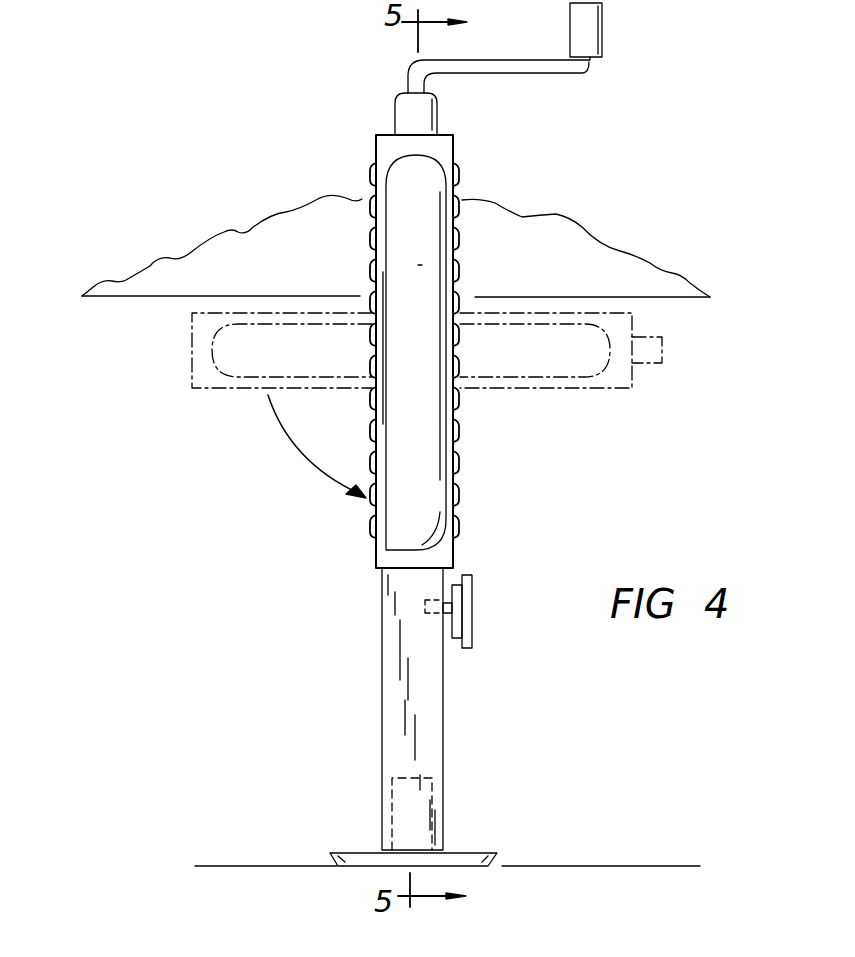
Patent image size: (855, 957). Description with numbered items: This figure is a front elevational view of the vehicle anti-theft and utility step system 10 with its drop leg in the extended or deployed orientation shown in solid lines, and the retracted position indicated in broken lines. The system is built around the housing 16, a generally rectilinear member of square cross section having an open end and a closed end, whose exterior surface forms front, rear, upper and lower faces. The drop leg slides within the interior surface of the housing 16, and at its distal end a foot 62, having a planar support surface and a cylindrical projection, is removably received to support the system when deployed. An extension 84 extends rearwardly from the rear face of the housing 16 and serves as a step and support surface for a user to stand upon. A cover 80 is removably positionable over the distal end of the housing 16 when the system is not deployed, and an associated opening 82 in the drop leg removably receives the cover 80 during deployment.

The vehicle anti-theft and utility step system 10 is at (254, 519).
The housing 16 is at (455, 150).
The extension 84 is at (420, 268).
The cover 80 is at (470, 608).
The opening 82 is at (433, 617).
The foot 62 is at (478, 853).